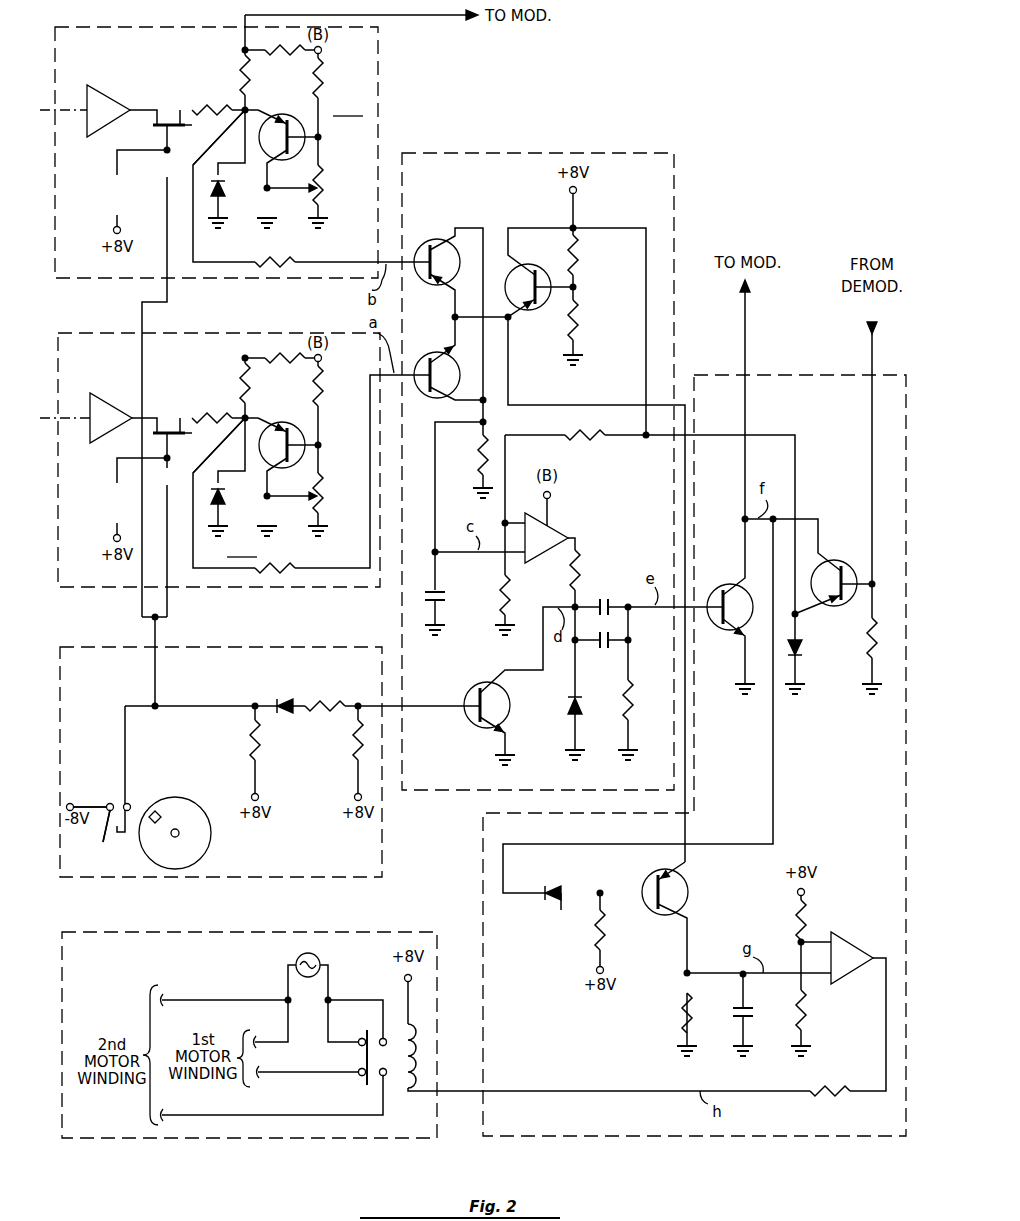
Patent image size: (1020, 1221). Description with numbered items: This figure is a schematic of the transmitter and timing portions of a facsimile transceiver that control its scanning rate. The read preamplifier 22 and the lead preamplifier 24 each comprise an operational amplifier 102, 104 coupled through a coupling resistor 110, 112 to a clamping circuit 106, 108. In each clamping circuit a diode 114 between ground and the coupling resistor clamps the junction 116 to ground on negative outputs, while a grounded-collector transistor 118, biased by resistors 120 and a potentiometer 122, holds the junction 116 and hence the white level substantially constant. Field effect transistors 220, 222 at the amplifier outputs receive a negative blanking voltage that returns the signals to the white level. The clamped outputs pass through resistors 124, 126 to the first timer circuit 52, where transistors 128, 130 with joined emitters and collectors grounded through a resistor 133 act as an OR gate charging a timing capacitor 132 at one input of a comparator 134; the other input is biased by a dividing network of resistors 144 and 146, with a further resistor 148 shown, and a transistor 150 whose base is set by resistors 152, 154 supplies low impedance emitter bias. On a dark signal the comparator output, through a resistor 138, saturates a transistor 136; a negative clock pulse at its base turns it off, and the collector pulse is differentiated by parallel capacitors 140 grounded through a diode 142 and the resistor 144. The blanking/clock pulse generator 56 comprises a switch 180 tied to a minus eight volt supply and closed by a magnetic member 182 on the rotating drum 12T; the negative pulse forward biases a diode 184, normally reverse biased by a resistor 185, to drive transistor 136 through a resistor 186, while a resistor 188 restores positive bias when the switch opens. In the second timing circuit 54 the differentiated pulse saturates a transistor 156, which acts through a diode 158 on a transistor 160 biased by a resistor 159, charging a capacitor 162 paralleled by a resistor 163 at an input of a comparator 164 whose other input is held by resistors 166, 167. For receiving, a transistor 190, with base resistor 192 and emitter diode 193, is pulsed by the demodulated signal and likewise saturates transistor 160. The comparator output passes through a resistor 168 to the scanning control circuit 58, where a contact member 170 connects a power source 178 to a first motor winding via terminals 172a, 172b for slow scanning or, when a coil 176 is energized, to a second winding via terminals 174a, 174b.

The read preamplifier 22 is at (150, 27).
The lead preamplifier 24 is at (75, 588).
The first timer circuit 52 is at (677, 187).
The second timing circuit 54 is at (720, 1138).
The blanking/clock pulse generator 56 is at (262, 646).
The scanning control circuit 58 is at (262, 1140).
The operational amplifier 102 is at (98, 100).
The operational amplifier 104 is at (100, 408).
The clamping circuit 106 is at (348, 107).
The clamping circuit 108 is at (242, 548).
The coupling resistor 110 is at (213, 104).
The coupling resistor 112 is at (214, 410).
The diode 114 is at (229, 193).
The junction 116 is at (243, 118).
The transistor 118 is at (299, 118).
The biasing resistors 120 is at (243, 64).
The potentiometer 122 is at (323, 191).
The resistor 124 is at (286, 262).
The resistor 126 is at (295, 560).
The transistor 128 is at (430, 244).
The transistor 130 is at (418, 358).
The timing capacitor 132 is at (443, 591).
The resistor 133 is at (478, 462).
The comparator 134 is at (560, 528).
The transistor 136 is at (473, 722).
The resistor 138 is at (583, 566).
The parallel capacitors 140 is at (604, 649).
The diode 142 is at (568, 711).
The resistor 144 is at (632, 713).
The resistor 146 is at (500, 592).
The resistor 148 is at (595, 440).
The transistor 150 is at (525, 270).
The resistor 152 is at (578, 266).
The resistor 154 is at (580, 329).
The transistor 156 is at (718, 625).
The diode 158 is at (553, 885).
The resistor 159 is at (595, 933).
The transistor 160 is at (682, 890).
The capacitor 162 is at (740, 1010).
The resistor 163 is at (682, 1002).
The comparator 164 is at (845, 948).
The resistor 166 is at (806, 1015).
The resistor 167 is at (797, 921).
The resistor 168 is at (829, 1095).
The contact member 170 is at (364, 1053).
The terminal 172a is at (360, 1039).
The terminal 172b is at (358, 1077).
The terminal 174a is at (386, 1036).
The terminal 174b is at (386, 1076).
The coil 176 is at (405, 1030).
The source of power 178 is at (296, 957).
The switch 180 is at (88, 797).
The magnetic member 182 is at (157, 812).
The drum 12T is at (212, 843).
The diode 184 is at (285, 697).
The resistor 185 is at (250, 738).
The resistor 186 is at (318, 700).
The resistor 188 is at (350, 740).
The transistor 190 is at (828, 562).
The resistor 192 is at (868, 642).
The diode 193 is at (803, 648).
The field effect transistor 220 is at (158, 127).
The field effect transistor 222 is at (170, 430).